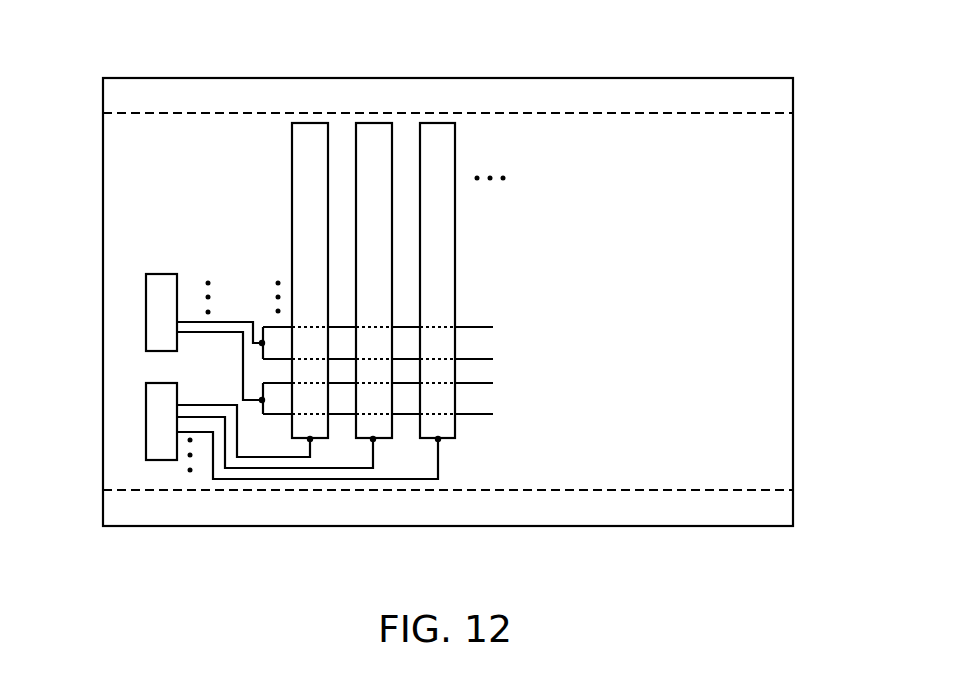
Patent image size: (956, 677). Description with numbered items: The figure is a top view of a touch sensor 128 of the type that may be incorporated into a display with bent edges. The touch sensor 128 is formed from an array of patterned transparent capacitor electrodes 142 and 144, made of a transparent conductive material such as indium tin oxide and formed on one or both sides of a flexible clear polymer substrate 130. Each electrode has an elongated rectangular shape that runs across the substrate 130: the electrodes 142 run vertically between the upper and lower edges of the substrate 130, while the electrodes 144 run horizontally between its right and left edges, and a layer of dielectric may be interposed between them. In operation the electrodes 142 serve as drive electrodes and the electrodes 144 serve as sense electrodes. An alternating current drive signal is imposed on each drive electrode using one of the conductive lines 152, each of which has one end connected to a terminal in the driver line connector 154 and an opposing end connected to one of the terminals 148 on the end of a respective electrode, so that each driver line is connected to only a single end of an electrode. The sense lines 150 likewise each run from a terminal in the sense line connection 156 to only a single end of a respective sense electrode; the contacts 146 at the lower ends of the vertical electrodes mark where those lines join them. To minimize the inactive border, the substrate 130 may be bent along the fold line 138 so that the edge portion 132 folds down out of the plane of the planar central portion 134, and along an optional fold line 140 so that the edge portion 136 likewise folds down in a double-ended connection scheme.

The touch sensor 128 is at (760, 42).
The flexible substrate 130 is at (793, 337).
The edge portion 132 is at (799, 490).
The planar central portion 134 is at (82, 115).
The edge portion 136 is at (85, 78).
The fold line 138 is at (695, 490).
The fold line 140 is at (560, 112).
The electrodes 142 is at (383, 252).
The electrodes 144 is at (492, 425).
The column electrode connections 146 is at (310, 440).
The terminals 148 is at (262, 343).
The sense lines 150 is at (285, 468).
The conductive lines 152 is at (235, 335).
The driver line connector 154 is at (146, 322).
The sense line connection 156 is at (146, 423).